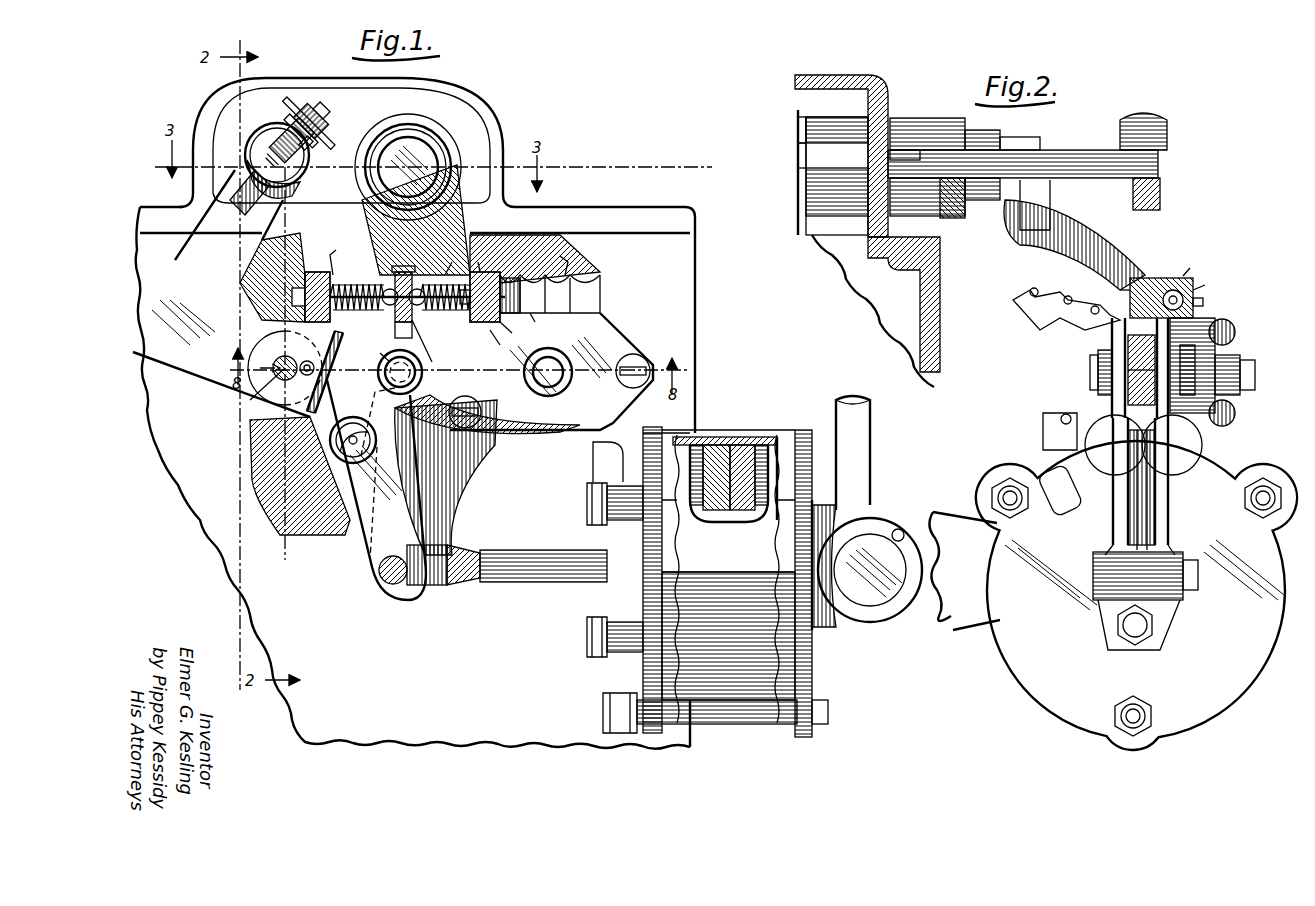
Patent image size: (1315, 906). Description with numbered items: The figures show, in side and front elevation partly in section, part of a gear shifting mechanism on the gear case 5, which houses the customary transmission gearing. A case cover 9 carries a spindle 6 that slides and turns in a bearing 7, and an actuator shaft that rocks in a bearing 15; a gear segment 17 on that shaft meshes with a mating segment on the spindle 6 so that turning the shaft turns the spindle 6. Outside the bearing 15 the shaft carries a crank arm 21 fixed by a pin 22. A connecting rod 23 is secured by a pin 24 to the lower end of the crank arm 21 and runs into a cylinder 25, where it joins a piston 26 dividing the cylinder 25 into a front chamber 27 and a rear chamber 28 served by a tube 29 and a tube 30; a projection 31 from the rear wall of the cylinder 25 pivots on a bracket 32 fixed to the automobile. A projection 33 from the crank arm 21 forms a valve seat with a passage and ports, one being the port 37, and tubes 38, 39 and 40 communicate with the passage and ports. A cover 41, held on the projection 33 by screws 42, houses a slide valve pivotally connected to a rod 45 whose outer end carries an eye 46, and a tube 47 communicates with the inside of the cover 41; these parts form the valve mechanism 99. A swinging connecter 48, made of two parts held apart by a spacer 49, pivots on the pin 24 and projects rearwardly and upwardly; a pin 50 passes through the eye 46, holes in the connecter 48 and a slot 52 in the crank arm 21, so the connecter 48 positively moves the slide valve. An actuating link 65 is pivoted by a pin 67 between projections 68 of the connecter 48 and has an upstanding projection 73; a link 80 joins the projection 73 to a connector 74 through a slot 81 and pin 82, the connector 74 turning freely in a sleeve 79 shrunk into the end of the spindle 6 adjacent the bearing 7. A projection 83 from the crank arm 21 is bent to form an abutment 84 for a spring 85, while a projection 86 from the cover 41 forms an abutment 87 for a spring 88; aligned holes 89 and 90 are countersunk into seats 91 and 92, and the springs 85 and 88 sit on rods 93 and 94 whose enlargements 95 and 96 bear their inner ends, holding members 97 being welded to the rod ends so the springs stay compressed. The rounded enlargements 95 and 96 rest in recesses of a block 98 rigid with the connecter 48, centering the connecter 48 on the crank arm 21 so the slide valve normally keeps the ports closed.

In FIG. 1, the gear case 5 is at (683, 306).
In FIG. 2, the gear case 5 is at (934, 305).
In FIG. 2, the spindle 6 is at (800, 160).
In FIG. 1, the bearing 7 is at (272, 130).
In FIG. 2, the bearing 7 is at (815, 165).
In FIG. 1, the case cover 9 is at (478, 125).
In FIG. 2, the case cover 9 is at (806, 77).
In FIG. 1, the bearing 15 is at (418, 120).
In FIG. 2, the bearing 15 is at (922, 140).
In FIG. 1, the gear segment 17 is at (424, 165).
In FIG. 2, the gear segment 17 is at (812, 120).
In FIG. 1, the crank arm 21 is at (460, 228).
In FIG. 2, the crank arm 21 is at (1022, 232).
In FIG. 2, the pin 22 is at (1000, 220).
In FIG. 1, the connecting rod 23 is at (502, 582).
In FIG. 2, the connecting rod 23 is at (1115, 600).
In FIG. 2, the pin 24 is at (1192, 588).
In FIG. 1, the cylinder 25 is at (735, 715).
In FIG. 2, the cylinder 25 is at (1062, 680).
In FIG. 1, the piston 26 is at (728, 522).
In FIG. 1, the front chamber 27 is at (395, 585).
In FIG. 1, the rear chamber 28 is at (778, 440).
In FIG. 1, the tube 29 is at (595, 455).
In FIG. 2, the tube 29 is at (1055, 498).
In FIG. 1, the tube 30 is at (862, 455).
In FIG. 2, the tube 30 is at (1048, 434).
In FIG. 1, the projection 31 is at (832, 610).
In FIG. 1, the bracket 32 is at (878, 600).
In FIG. 2, the bracket 32 is at (966, 625).
In FIG. 1, the projection 33 is at (515, 440).
In FIG. 1, the port 37 is at (504, 345).
In FIG. 1, the tube 38 is at (569, 255).
In FIG. 2, the tube 38 is at (1110, 318).
In FIG. 1, the tube 39 is at (542, 322).
In FIG. 2, the tube 39 is at (1125, 328).
In FIG. 1, the tube 40 is at (585, 290).
In FIG. 2, the tube 40 is at (1035, 315).
In FIG. 1, the cover 41 is at (610, 420).
In FIG. 2, the cover 41 is at (1208, 430).
In FIG. 1, the screws 42 is at (640, 358).
In FIG. 2, the screws 42 is at (1233, 332).
In FIG. 1, the rod 45 is at (440, 430).
In FIG. 1, the eye 46 is at (392, 390).
In FIG. 2, the eye 46 is at (1185, 392).
In FIG. 1, the tube 47 is at (553, 393).
In FIG. 2, the tube 47 is at (1246, 372).
In FIG. 1, the swinging connecter 48 is at (362, 525).
In FIG. 2, the swinging connecter 48 is at (1140, 495).
In FIG. 1, the spacer 49 is at (355, 460).
In FIG. 2, the spacer 49 is at (1120, 450).
In FIG. 1, the pin 50 is at (395, 376).
In FIG. 2, the pin 50 is at (1190, 372).
In FIG. 1, the slot 52 is at (376, 352).
In FIG. 1, the actuating link 65 is at (198, 365).
In FIG. 2, the actuating link 65 is at (1112, 410).
In FIG. 1, the pin 67 is at (270, 388).
In FIG. 2, the pin 67 is at (1098, 366).
In FIG. 1, the projections 68 is at (255, 428).
In FIG. 2, the projections 68 is at (1100, 380).
In FIG. 1, the projection 73 is at (232, 196).
In FIG. 2, the projection 73 is at (1150, 196).
In FIG. 1, the connector 74 is at (310, 146).
In FIG. 2, the connector 74 is at (945, 135).
In FIG. 1, the sleeve 79 is at (247, 155).
In FIG. 1, the link 80 is at (298, 172).
In FIG. 2, the link 80 is at (1082, 160).
In FIG. 2, the slot 81 is at (897, 150).
In FIG. 2, the pin 82 is at (948, 222).
In FIG. 1, the projection 83 is at (363, 248).
In FIG. 2, the projection 83 is at (1128, 292).
In FIG. 1, the support and abutment 84 is at (305, 285).
In FIG. 1, the spring 85 is at (350, 310).
In FIG. 2, the spring 85 is at (1200, 288).
In FIG. 1, the projection 86 is at (488, 272).
In FIG. 1, the support and abutment 87 is at (522, 295).
In FIG. 2, the support and abutment 87 is at (1152, 292).
In FIG. 1, the spring 88 is at (412, 330).
In FIG. 1, the hole 89 is at (335, 283).
In FIG. 1, the hole 90 is at (516, 334).
In FIG. 1, the seat 91 is at (326, 253).
In FIG. 1, the seat 92 is at (469, 263).
In FIG. 1, the rod 93 is at (380, 310).
In FIG. 2, the rod 93 is at (1200, 300).
In FIG. 1, the rod 94 is at (446, 273).
In FIG. 1, the enlargement 95 is at (400, 322).
In FIG. 1, the enlargement 96 is at (425, 340).
In FIG. 1, the holding members 97 is at (292, 296).
In FIG. 2, the holding members 97 is at (1176, 292).
In FIG. 1, the block 98 is at (404, 266).
In FIG. 2, the block 98 is at (1190, 268).
In FIG. 1, the valve mechanism 99 is at (588, 350).
In FIG. 2, the valve mechanism 99 is at (1200, 335).